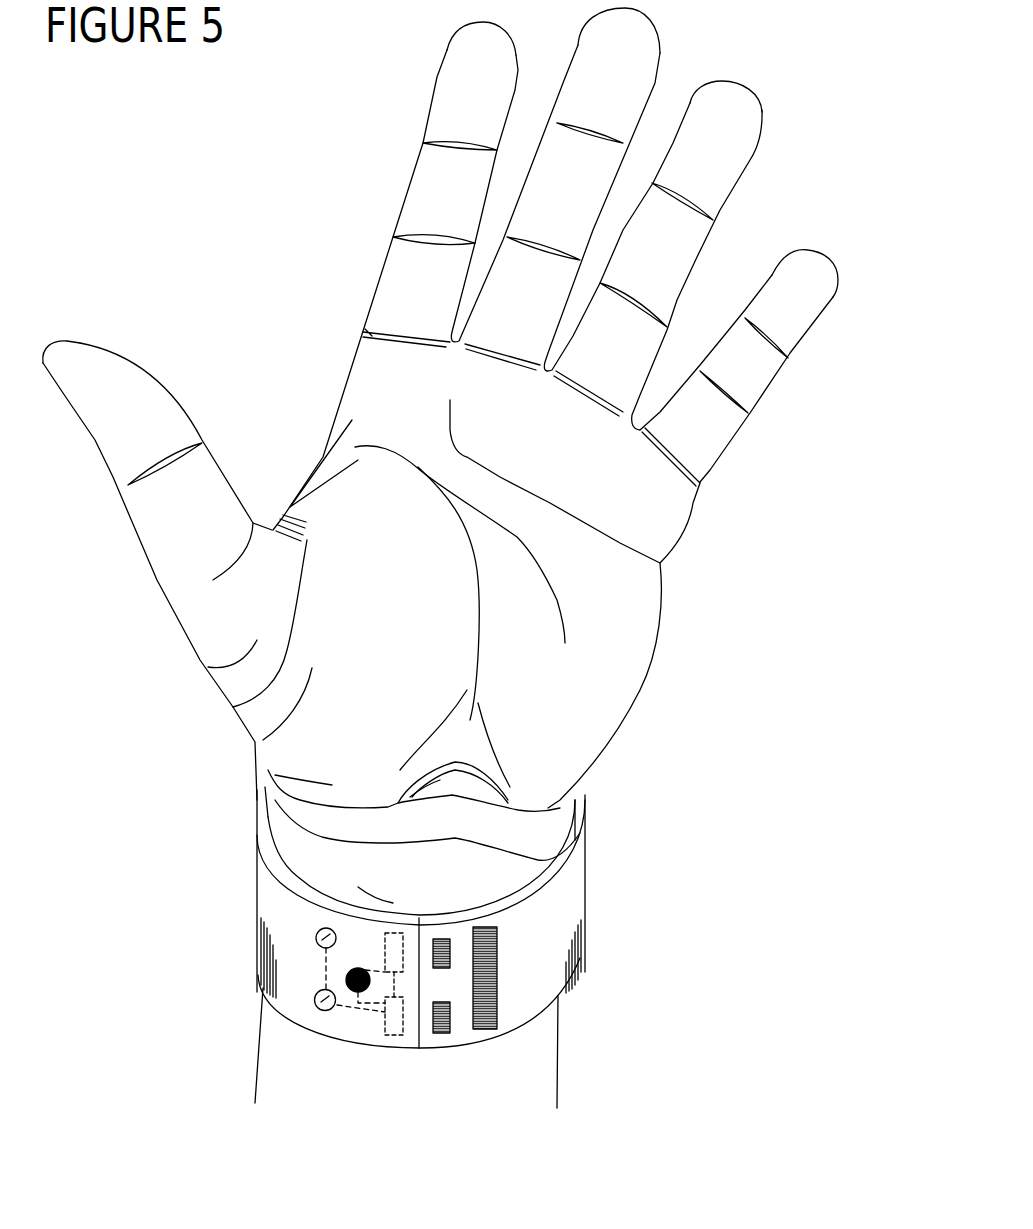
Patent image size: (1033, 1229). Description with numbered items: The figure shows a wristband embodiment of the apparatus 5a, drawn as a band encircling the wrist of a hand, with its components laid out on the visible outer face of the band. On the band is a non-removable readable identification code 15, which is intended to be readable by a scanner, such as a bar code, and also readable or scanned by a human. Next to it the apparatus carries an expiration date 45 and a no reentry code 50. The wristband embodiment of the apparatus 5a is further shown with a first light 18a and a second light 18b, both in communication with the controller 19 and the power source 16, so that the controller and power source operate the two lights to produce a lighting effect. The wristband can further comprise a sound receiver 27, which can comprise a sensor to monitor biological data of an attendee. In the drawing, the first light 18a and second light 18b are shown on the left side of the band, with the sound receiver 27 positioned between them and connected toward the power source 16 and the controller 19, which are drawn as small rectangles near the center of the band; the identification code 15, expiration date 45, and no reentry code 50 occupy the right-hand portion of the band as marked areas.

The apparatus 5a is at (598, 893).
The non-removable readable identification code 15 is at (485, 1030).
The power source 16 is at (395, 932).
The first light 18a is at (326, 928).
The second light 18b is at (319, 1010).
The controller 19 is at (394, 1036).
The sound receiver 27 is at (352, 991).
The expiration date 45 is at (441, 938).
The no reentry code 50 is at (442, 1034).